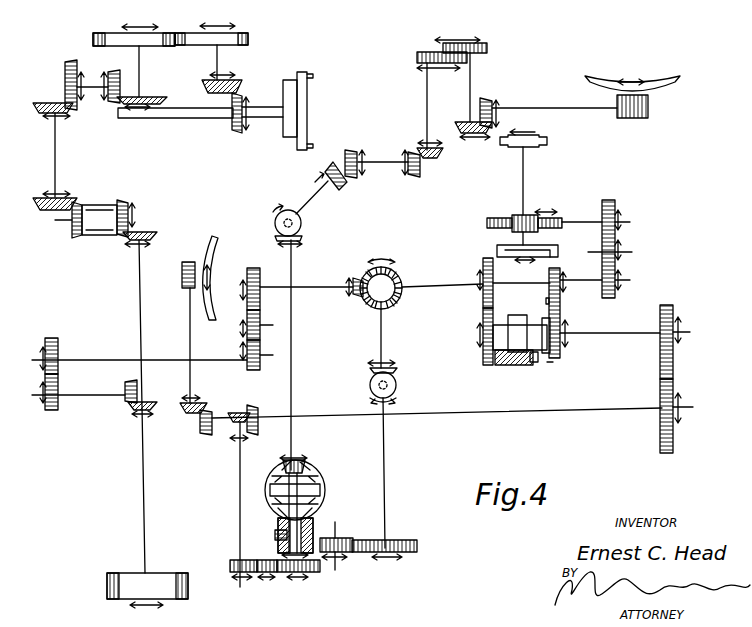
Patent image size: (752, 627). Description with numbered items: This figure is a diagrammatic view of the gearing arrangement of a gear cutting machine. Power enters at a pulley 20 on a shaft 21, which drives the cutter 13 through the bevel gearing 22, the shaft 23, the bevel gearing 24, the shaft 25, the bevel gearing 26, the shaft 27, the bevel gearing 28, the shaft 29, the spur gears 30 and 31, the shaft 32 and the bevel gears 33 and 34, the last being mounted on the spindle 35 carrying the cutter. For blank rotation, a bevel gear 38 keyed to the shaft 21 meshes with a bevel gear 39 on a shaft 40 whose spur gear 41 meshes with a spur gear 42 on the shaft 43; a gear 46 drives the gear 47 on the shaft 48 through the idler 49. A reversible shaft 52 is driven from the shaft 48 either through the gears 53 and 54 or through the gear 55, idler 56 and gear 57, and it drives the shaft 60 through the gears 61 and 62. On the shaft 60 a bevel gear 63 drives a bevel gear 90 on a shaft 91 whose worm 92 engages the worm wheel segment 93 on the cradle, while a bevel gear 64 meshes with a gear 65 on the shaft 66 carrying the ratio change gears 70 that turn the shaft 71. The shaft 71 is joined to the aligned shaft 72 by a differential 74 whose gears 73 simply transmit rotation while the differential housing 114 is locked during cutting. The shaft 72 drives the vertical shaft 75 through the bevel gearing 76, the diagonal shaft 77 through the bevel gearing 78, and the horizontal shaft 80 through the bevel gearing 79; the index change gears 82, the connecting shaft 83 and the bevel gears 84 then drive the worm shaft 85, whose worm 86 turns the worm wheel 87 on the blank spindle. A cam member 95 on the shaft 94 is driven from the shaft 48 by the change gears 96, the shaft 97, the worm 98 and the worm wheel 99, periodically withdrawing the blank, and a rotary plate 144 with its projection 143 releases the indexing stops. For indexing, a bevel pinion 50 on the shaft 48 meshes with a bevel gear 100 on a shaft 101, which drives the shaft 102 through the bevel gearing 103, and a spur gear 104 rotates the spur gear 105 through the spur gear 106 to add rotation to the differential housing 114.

The cutter 13 is at (306, 73).
The pulley 20 is at (186, 598).
The shaft 21 is at (146, 492).
The bevel gearing 22 is at (128, 241).
The shaft 23 is at (95, 240).
The bevel gearing 24 is at (40, 211).
The shaft 25 is at (57, 162).
The bevel gearing 26 is at (45, 104).
The shaft 27 is at (90, 86).
The bevel gearing 28 is at (166, 98).
The shaft 29 is at (141, 77).
The spur gear 30 is at (160, 33).
The spur gear 31 is at (238, 33).
The shaft 32 is at (218, 62).
The bevel gear 33 is at (238, 83).
The bevel gear 34 is at (243, 130).
The spindle 35 is at (258, 107).
The bevel gear 38 is at (152, 402).
The bevel gear 39 is at (130, 381).
The shaft 40 is at (80, 393).
The spur gear 41 is at (50, 410).
The spur gear 42 is at (52, 340).
The shaft 43 is at (152, 358).
The gear 46 is at (257, 370).
The gear 47 is at (253, 268).
The shaft 48 is at (312, 287).
The idler 49 is at (261, 318).
The bevel pinion 50 is at (362, 278).
The reversible shaft 52 is at (596, 333).
The gear 53 is at (484, 259).
The gear 54 is at (486, 357).
The gear 55 is at (561, 271).
The idler 56 is at (549, 301).
The gear 57 is at (557, 352).
The shaft 60 is at (600, 410).
The gear 61 is at (674, 306).
The gear 62 is at (675, 446).
The bevel gear 63 is at (207, 433).
The bevel gear 64 is at (240, 412).
The gear 65 is at (253, 434).
The shaft 66 is at (242, 494).
The ratio change gears 70 is at (268, 573).
The shaft 71 is at (300, 574).
The shaft 72 is at (293, 372).
The gears of the differential 73 is at (322, 490).
The differential 74 is at (306, 466).
The vertical shaft 75 is at (312, 206).
The bevel gearing 76 is at (275, 220).
The diagonal shaft 77 is at (376, 161).
The bevel gearing 78 is at (349, 150).
The bevel gearing 79 is at (437, 160).
The horizontal shaft 80 is at (427, 109).
The index change gears 82 is at (451, 43).
The connecting shaft 83 is at (471, 90).
The bevel gears 84 is at (493, 100).
The worm shaft 85 is at (541, 108).
The worm 86 is at (649, 112).
The worm wheel 87 is at (679, 80).
The bevel gear 90 is at (187, 413).
The shaft 91 is at (190, 336).
The worm 92 is at (182, 277).
The worm wheel segment 93 is at (212, 237).
The shaft 94 is at (526, 180).
The cam member 95 is at (548, 143).
The change gears 96 is at (616, 243).
The shaft 97 is at (578, 221).
The worm 98 is at (527, 215).
The worm wheel 99 is at (500, 218).
The bevel gear 100 is at (393, 270).
The shaft 101 is at (384, 332).
The shaft 102 is at (388, 481).
The bevel gearing 103 is at (397, 383).
The spur gear 104 is at (416, 542).
The spur gear 105 is at (278, 546).
The spur gear 106 is at (345, 540).
The differential housing 114 is at (315, 500).
The projection 143 is at (497, 257).
The rotary plate 144 is at (541, 247).